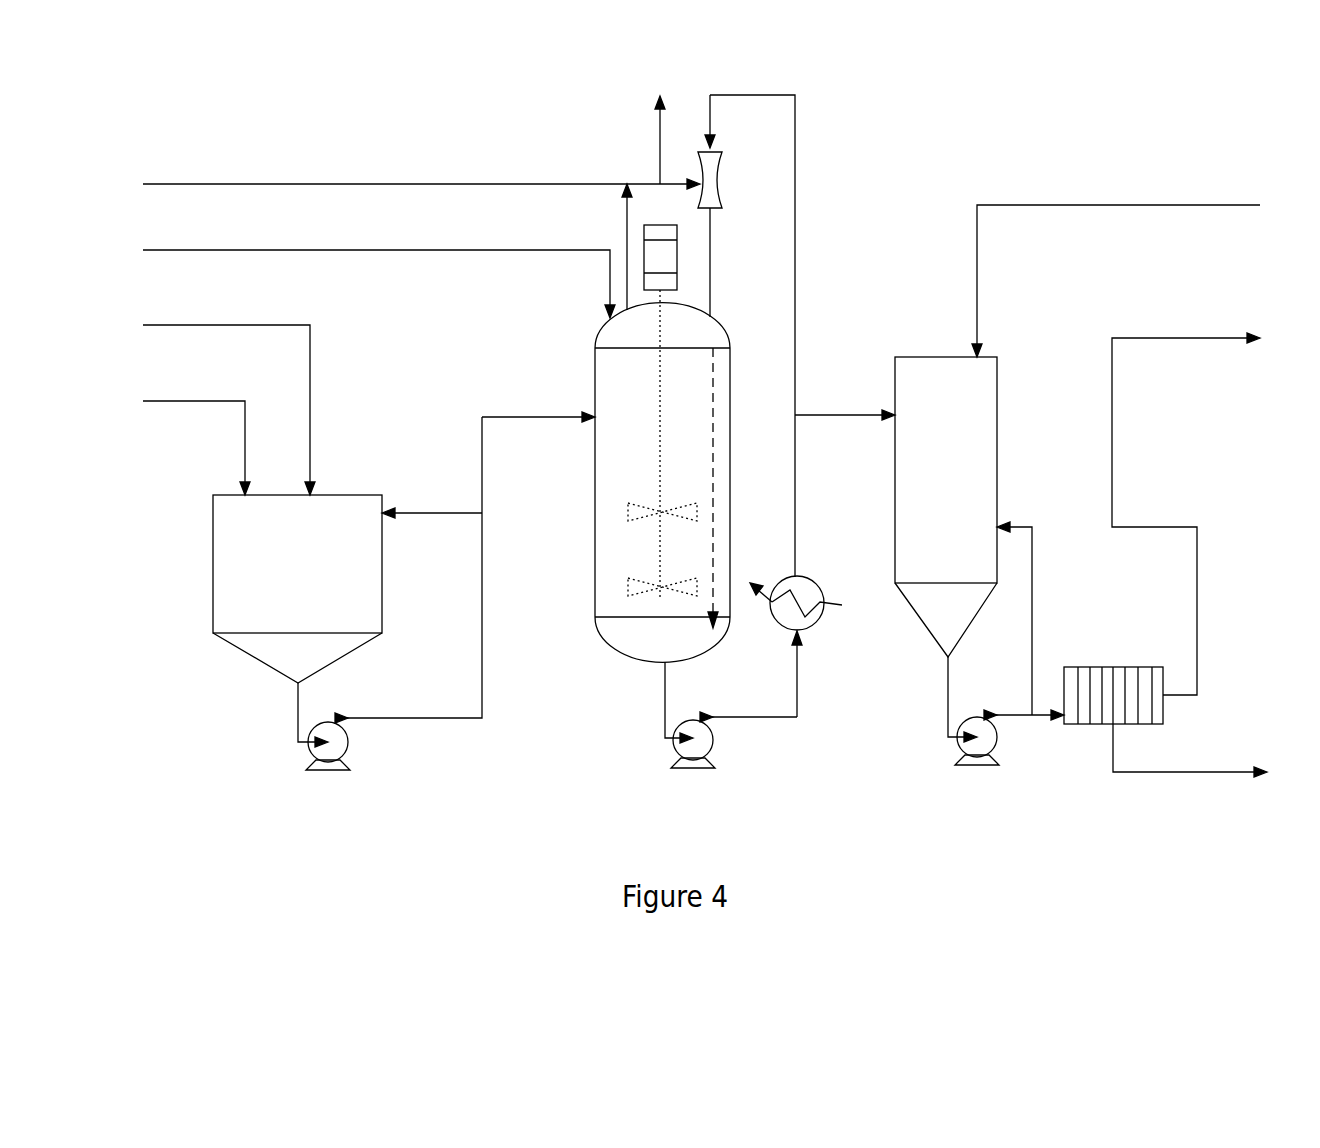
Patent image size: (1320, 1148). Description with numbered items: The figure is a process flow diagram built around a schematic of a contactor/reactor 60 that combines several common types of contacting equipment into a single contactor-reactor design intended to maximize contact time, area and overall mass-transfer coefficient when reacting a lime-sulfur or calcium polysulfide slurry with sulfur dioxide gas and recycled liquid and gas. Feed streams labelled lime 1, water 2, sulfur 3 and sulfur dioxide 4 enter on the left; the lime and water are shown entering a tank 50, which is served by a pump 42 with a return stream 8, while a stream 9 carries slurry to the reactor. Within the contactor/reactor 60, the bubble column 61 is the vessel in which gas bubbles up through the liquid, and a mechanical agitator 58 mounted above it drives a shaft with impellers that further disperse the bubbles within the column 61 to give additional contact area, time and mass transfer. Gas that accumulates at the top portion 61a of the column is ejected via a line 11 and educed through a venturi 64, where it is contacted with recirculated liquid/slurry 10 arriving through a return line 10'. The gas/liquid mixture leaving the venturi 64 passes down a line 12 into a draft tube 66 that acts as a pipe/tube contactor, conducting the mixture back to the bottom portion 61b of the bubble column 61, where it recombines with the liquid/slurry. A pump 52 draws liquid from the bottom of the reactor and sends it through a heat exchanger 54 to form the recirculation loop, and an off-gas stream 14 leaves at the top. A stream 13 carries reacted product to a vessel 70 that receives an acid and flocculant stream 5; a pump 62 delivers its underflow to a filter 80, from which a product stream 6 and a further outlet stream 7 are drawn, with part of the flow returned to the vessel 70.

The lime feed line 1 is at (185, 429).
The water feed line 2 is at (217, 391).
The sulfur feed line 3 is at (367, 265).
The SO2 feed line 4 is at (410, 172).
The acid and flocculant feed line 5 is at (1129, 263).
The product outlet line 6 is at (1198, 498).
The filter cake outlet line 7 is at (1201, 755).
The recycle line to slurry tank 8 is at (432, 499).
The slurry feed line to reactor 9 is at (538, 404).
The recirculated liquid/slurry 10 is at (777, 498).
The recirculation return line 10' is at (776, 336).
The line 11 is at (625, 241).
The venturi discharge line 12 is at (713, 266).
The reactor outlet line to clarifier 13 is at (845, 400).
The off-gas line 14 is at (648, 140).
The slurry pump 42 is at (337, 751).
The slurry mixing tank 50 is at (297, 621).
The reactor recirculation pump 52 is at (695, 750).
The heat exchanger 54 is at (800, 595).
The mechanical agitator 58 is at (660, 257).
The contactor/reactor 60 is at (662, 523).
The bubble column 61 is at (620, 553).
The top portion of the column 61a is at (623, 333).
The bottom portion of the column 61b is at (645, 642).
The clarifier underflow pump 62 is at (987, 738).
The venturi 64 is at (710, 198).
The dip tube 66 is at (712, 372).
The clarifier 70 is at (946, 549).
The filter 80 is at (1137, 669).